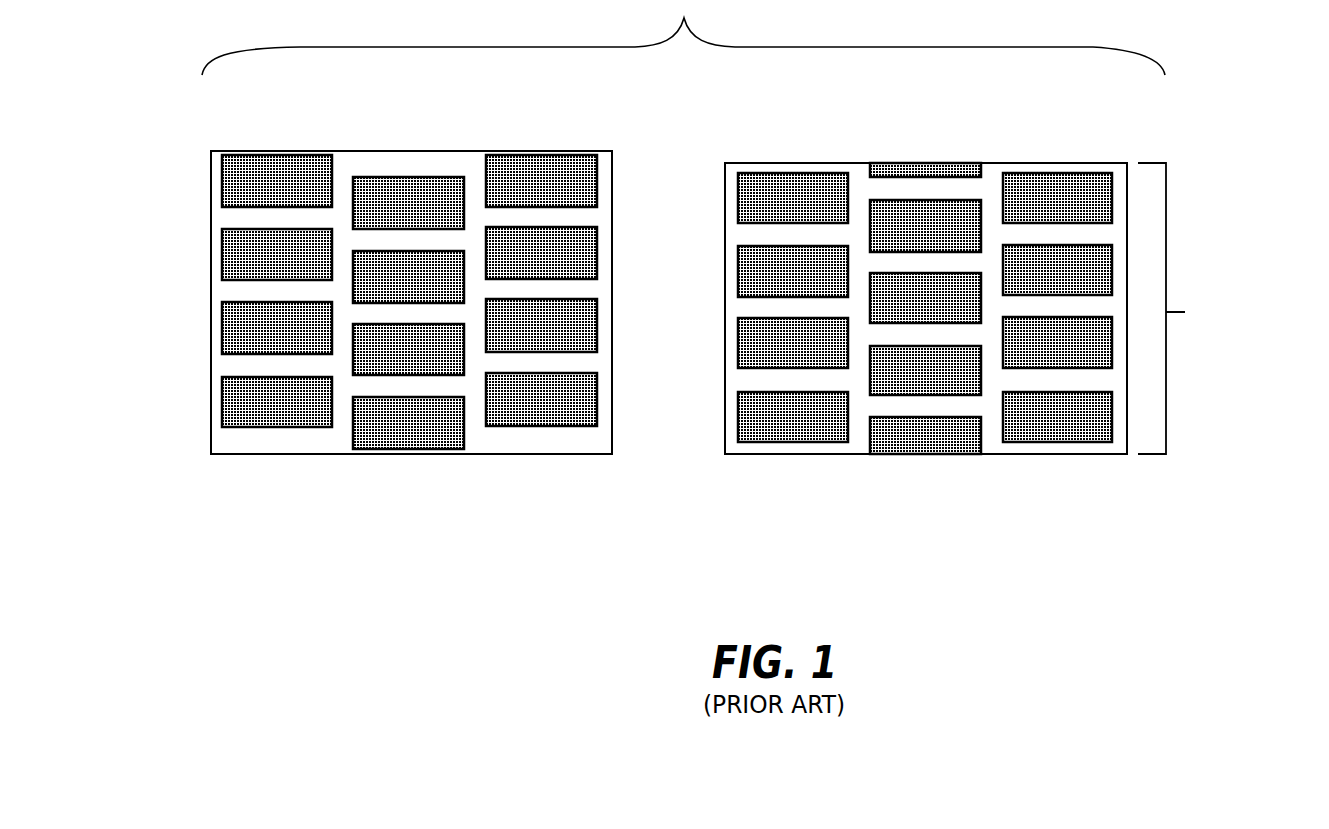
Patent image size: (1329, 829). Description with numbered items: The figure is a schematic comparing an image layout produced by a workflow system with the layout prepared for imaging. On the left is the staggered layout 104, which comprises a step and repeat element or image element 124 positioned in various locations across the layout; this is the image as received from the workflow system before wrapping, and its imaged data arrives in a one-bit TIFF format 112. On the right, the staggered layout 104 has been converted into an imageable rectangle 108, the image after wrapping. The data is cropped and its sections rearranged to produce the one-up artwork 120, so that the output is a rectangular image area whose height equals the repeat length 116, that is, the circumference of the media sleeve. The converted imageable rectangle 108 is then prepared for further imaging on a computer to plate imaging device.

The staggered layout 104 is at (371, 339).
The imageable rectangle 108 is at (926, 298).
The 1-bit TIFF format 112 is at (402, 169).
The repeat length 116 is at (1166, 388).
The one-up artwork 120 is at (870, 185).
The image element 124 is at (538, 165).